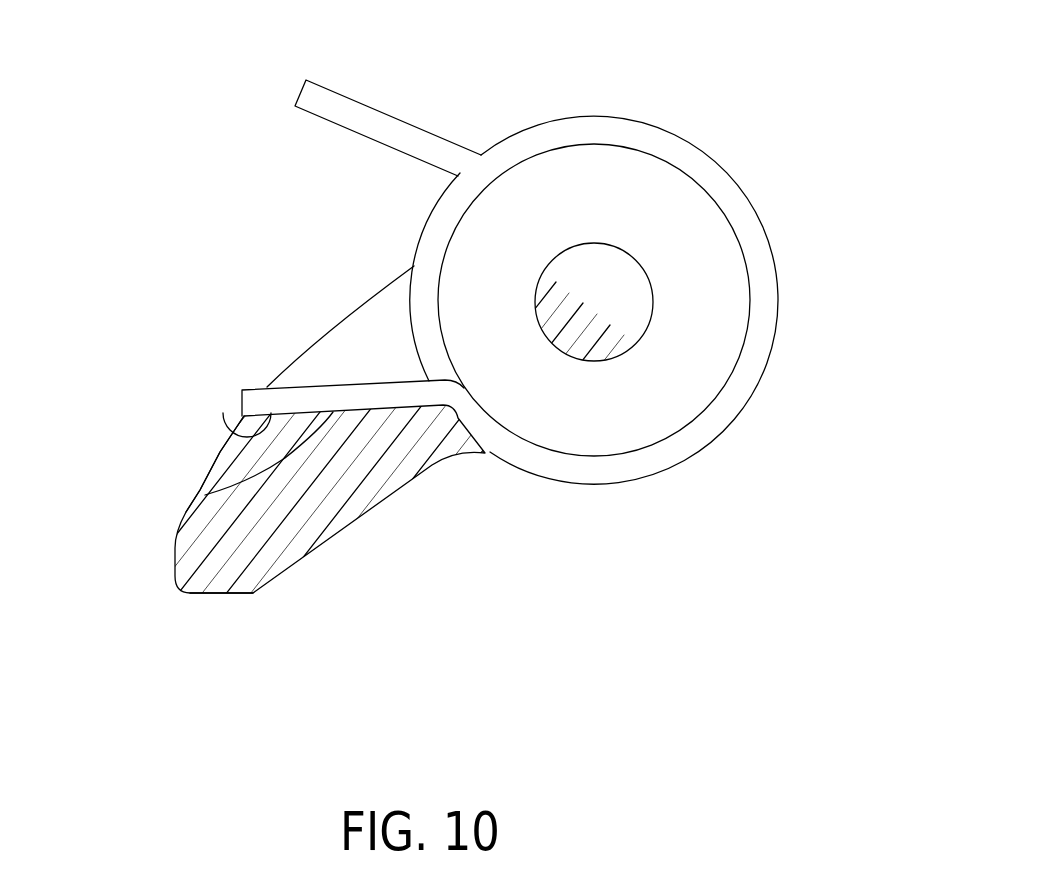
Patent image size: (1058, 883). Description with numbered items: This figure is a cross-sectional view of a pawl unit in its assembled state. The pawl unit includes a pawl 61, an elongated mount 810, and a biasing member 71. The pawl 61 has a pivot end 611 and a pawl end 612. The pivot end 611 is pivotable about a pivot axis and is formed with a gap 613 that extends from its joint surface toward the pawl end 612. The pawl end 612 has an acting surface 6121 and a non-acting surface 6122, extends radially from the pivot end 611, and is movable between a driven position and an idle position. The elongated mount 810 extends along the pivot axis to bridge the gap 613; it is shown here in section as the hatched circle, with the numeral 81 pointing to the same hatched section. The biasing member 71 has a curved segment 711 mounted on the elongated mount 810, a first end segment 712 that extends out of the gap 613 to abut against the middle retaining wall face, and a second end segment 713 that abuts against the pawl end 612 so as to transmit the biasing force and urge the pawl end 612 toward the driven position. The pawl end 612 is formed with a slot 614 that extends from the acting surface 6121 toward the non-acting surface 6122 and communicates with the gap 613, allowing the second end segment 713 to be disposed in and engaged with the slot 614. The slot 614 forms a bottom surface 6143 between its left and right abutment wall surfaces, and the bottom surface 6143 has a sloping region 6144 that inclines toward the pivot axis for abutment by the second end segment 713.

The pawl 61 is at (445, 383).
The pivot end 611 is at (727, 351).
The pawl end 612 is at (327, 537).
The acting surface 6121 is at (220, 452).
The non-acting surface 6122 is at (283, 575).
The gap 613 is at (594, 447).
The slot 614 is at (340, 337).
The bottom surface 6143 is at (205, 495).
The sloping region 6144 is at (220, 413).
The biasing member 71 is at (529, 276).
The curved segment 711 is at (715, 186).
The first end segment 712 is at (387, 120).
The second end segment 713 is at (393, 401).
The shaft 81 is at (614, 394).
The elongated mount 810 is at (640, 290).